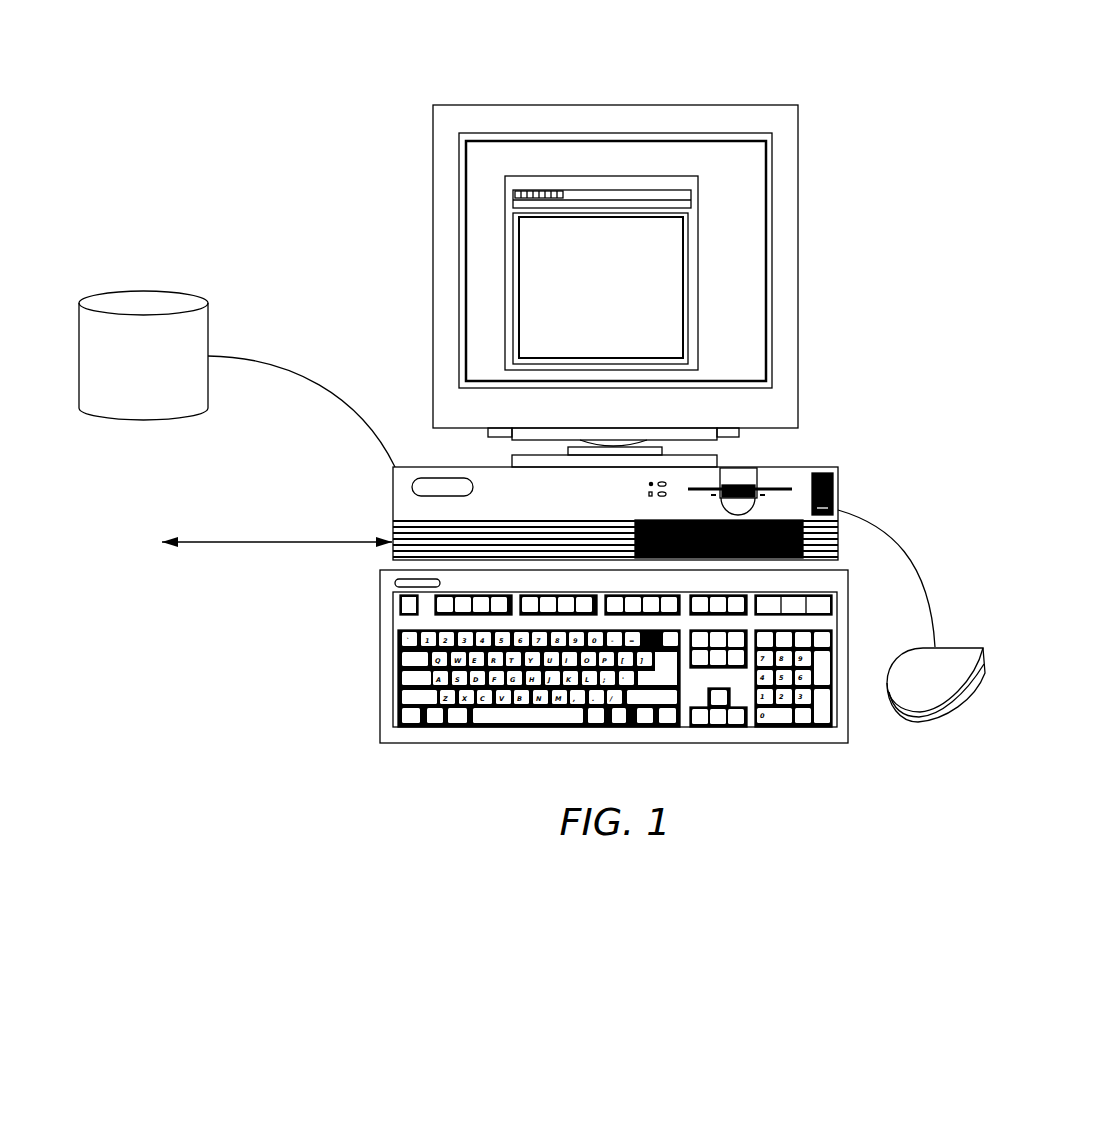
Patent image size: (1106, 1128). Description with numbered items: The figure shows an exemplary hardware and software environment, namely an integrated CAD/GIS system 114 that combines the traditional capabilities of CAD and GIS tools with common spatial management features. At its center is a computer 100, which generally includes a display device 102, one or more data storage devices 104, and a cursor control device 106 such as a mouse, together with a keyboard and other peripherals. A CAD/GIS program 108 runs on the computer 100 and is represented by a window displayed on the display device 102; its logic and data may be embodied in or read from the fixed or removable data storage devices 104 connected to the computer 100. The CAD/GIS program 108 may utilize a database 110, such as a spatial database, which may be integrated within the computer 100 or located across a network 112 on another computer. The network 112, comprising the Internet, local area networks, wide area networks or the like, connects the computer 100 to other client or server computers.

The computer 100 is at (840, 483).
The display device 102 is at (798, 138).
The data storage device 104 is at (773, 485).
The cursor control device 106 is at (960, 705).
The CAD/GIS program 108 is at (698, 273).
The database 110 is at (237, 385).
The network 112 is at (226, 543).
The integrated CAD/GIS system 114 is at (362, 143).